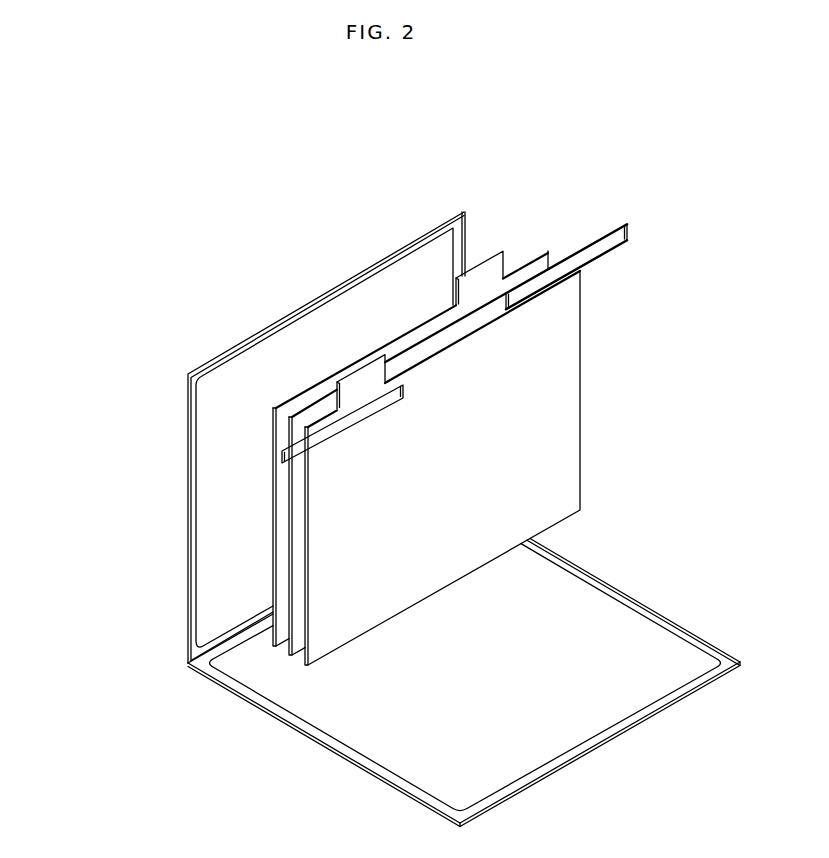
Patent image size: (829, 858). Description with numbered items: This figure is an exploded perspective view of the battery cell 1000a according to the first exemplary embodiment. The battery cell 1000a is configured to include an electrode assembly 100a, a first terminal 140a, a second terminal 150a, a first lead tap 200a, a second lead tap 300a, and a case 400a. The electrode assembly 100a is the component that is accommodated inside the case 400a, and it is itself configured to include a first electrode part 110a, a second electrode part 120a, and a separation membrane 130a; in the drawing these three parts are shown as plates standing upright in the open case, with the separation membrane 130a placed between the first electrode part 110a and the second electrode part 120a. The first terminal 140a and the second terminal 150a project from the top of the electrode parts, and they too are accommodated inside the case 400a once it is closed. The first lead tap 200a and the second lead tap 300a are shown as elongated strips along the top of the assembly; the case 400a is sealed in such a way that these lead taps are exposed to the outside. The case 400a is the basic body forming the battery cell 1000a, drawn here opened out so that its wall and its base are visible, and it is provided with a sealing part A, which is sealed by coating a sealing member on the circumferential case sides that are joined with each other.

The battery cell 1000a is at (186, 260).
The electrode assembly 100a is at (120, 343).
The first electrode part 110a is at (281, 432).
The second electrode part 120a is at (313, 418).
The separation membrane 130a is at (337, 413).
The first terminal 140a is at (372, 372).
The second terminal 150a is at (482, 274).
The first lead tap 200a is at (297, 455).
The second lead tap 300a is at (585, 250).
The case 400a is at (205, 567).
The sealing part A is at (403, 237).